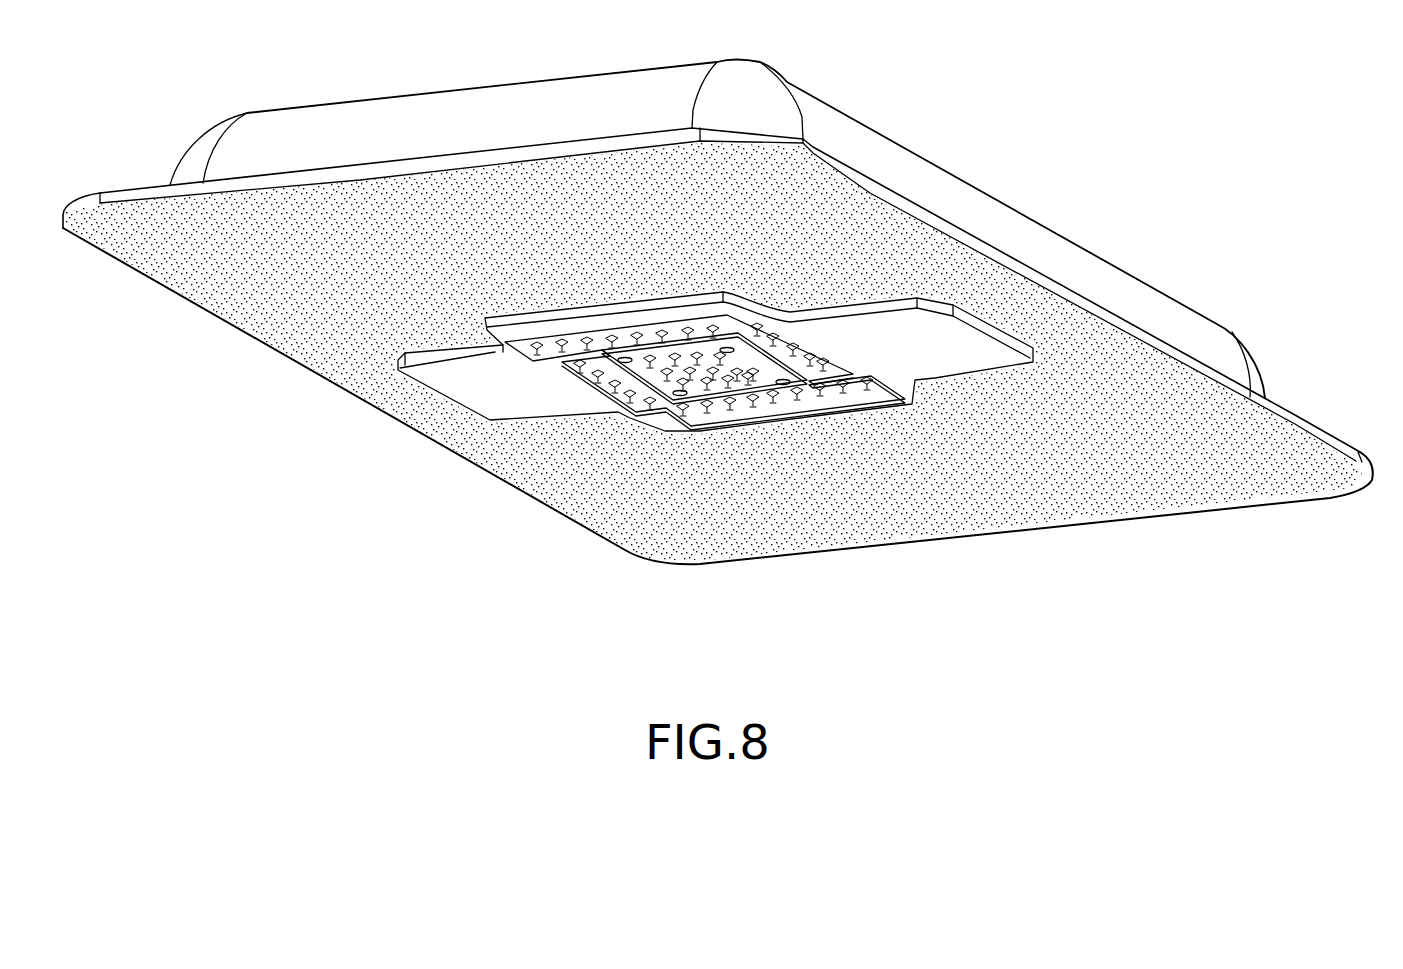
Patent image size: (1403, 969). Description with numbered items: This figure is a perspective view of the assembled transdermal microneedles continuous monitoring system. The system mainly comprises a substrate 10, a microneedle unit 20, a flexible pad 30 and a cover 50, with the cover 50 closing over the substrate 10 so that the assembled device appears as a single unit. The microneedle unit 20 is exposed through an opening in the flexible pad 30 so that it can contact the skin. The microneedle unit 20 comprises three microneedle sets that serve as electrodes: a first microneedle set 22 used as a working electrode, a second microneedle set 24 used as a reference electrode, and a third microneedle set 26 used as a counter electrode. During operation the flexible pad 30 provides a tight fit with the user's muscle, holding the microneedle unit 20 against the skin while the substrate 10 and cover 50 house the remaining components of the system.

The substrate 10 is at (693, 292).
The microneedle unit 20 is at (690, 471).
The first microneedle set 22 is at (645, 390).
The second microneedle set 24 is at (767, 410).
The third microneedle set 26 is at (522, 342).
The flexible pad 30 is at (1037, 535).
The cover 50 is at (1058, 232).